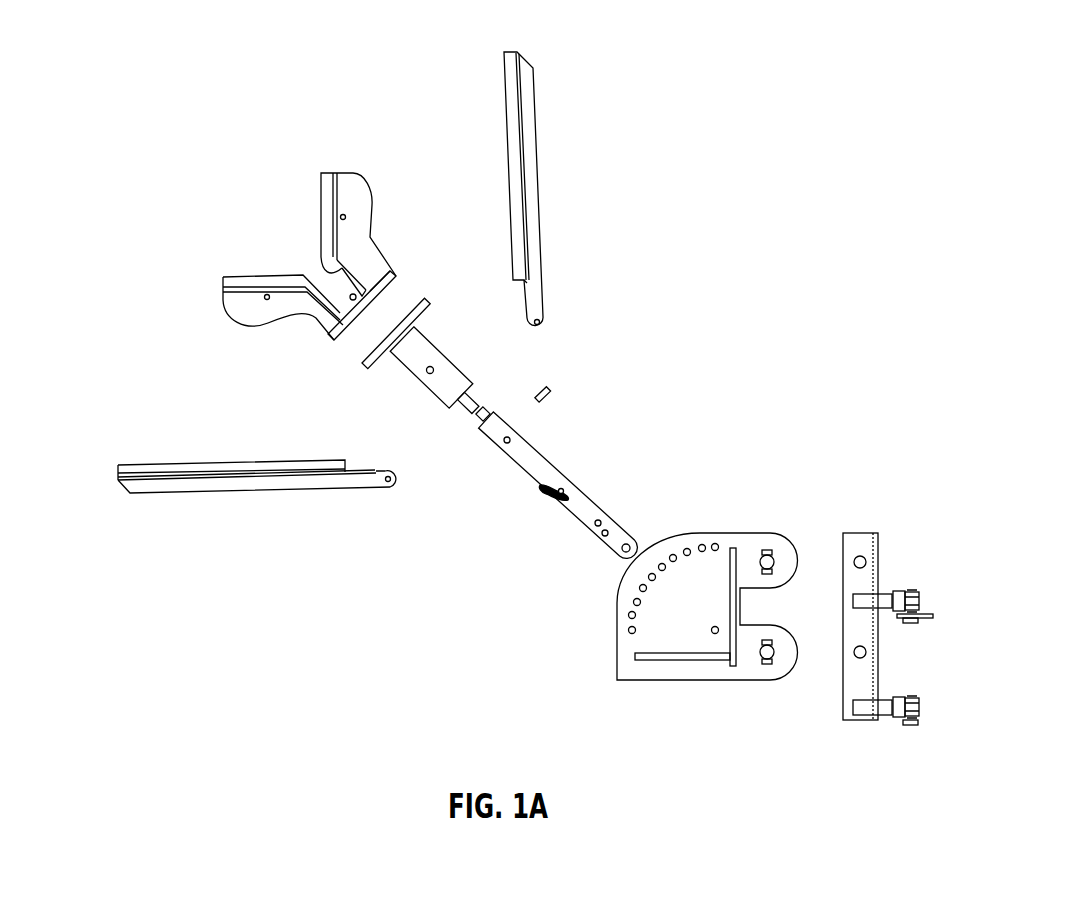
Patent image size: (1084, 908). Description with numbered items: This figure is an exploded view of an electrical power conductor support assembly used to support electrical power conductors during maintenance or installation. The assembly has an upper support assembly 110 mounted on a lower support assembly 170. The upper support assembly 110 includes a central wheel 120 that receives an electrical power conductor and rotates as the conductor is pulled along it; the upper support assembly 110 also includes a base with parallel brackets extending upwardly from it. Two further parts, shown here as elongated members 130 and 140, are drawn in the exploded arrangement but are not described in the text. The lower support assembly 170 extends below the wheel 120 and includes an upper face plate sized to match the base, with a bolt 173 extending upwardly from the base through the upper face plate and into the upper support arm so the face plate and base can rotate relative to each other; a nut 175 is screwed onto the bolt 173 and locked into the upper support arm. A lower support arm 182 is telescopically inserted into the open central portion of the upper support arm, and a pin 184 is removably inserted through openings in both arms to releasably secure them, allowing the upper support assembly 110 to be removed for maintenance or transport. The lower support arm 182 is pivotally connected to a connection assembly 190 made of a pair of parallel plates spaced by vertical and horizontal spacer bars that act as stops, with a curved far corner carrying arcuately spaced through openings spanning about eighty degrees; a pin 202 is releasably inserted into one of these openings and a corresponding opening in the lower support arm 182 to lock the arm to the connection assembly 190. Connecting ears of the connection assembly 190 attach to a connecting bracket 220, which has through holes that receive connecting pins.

The upper support assembly 110 is at (246, 270).
The central wheel 120 is at (346, 297).
The lower arm bar 130 is at (116, 481).
The upper arm bar 140 is at (531, 57).
The lower support assembly 170 is at (444, 350).
The bolt 173 is at (473, 407).
The nut 175 is at (484, 408).
The lower support arm 182 is at (548, 449).
The pin 184 is at (548, 384).
The connection assembly 190 is at (742, 540).
The pin 202 is at (552, 496).
The connecting bracket 220 is at (872, 558).